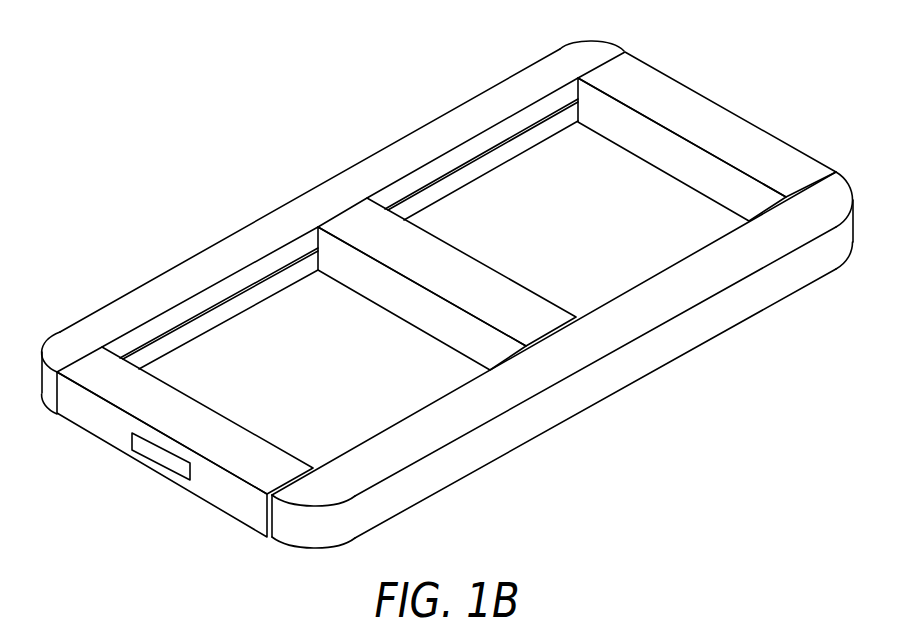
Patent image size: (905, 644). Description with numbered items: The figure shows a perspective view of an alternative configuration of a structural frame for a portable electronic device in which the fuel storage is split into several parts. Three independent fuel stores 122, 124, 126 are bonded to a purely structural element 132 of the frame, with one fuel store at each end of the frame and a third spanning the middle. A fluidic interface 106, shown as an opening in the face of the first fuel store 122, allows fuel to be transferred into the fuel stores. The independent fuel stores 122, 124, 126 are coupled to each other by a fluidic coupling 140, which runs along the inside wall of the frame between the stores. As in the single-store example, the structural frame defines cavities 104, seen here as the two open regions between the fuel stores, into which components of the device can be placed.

The cavities 104 is at (202, 352).
The fluidic interface 106 is at (160, 457).
The fuel store 122 is at (107, 428).
The fuel store 124 is at (388, 290).
The fuel store 126 is at (648, 143).
The structural element 132 is at (222, 250).
The fluidic coupling 140 is at (437, 178).